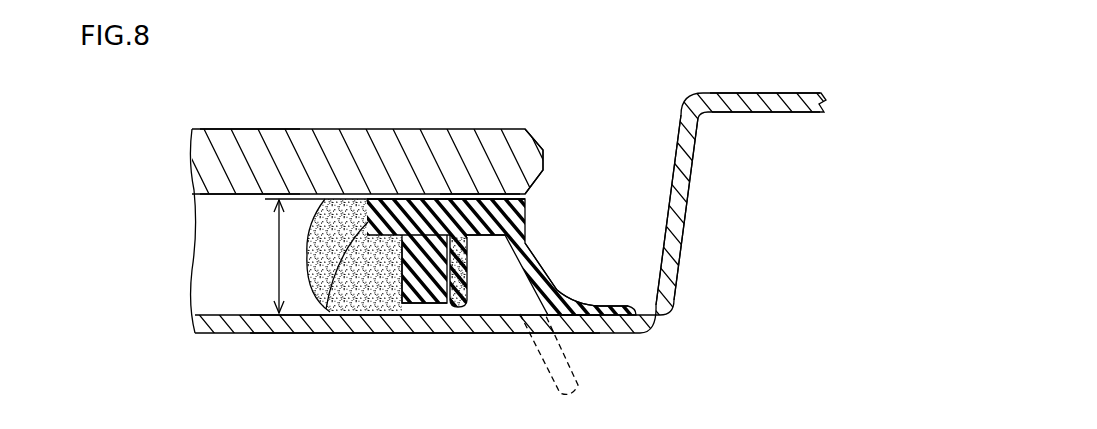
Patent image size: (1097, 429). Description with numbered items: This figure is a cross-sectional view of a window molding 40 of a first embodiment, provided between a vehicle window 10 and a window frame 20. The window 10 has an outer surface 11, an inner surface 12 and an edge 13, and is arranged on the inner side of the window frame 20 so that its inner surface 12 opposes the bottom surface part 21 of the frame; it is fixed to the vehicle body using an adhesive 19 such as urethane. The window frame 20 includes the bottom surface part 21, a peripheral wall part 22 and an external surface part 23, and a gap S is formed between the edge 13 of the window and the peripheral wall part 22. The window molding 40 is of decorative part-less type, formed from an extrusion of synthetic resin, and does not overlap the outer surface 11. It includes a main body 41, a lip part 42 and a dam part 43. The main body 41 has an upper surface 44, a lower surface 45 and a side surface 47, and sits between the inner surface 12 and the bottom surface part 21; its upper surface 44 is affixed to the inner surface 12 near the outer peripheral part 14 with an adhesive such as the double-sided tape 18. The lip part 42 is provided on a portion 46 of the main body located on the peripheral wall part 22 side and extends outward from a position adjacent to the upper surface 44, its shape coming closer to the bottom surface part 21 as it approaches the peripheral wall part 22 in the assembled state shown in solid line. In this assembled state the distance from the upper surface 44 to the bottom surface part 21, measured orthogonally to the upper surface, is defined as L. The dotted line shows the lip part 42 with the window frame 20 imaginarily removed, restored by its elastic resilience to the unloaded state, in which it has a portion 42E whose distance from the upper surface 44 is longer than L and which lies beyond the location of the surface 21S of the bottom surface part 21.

The window 10 is at (191, 163).
The outer surface 11 is at (216, 128).
The inner surface 12 is at (212, 196).
The edge 13 is at (543, 153).
The outer peripheral part 14 is at (485, 197).
The double-sided tape 18 is at (450, 197).
The adhesive 19 is at (363, 315).
The window frame 20 is at (820, 95).
The bottom surface part 21 is at (232, 336).
The surface 21S is at (252, 314).
The peripheral wall part 22 is at (690, 206).
The external surface part 23 is at (748, 93).
The window molding 40 is at (520, 373).
The main body 41 is at (490, 234).
The lip part 42 is at (512, 232).
The portion 42E is at (563, 346).
The dam part 43 is at (423, 300).
The upper surface 44 is at (400, 199).
The lower surface 45 is at (442, 199).
The portion 46 is at (513, 207).
The side surface 47 is at (323, 310).
The distance L is at (279, 258).
The gap S is at (605, 169).